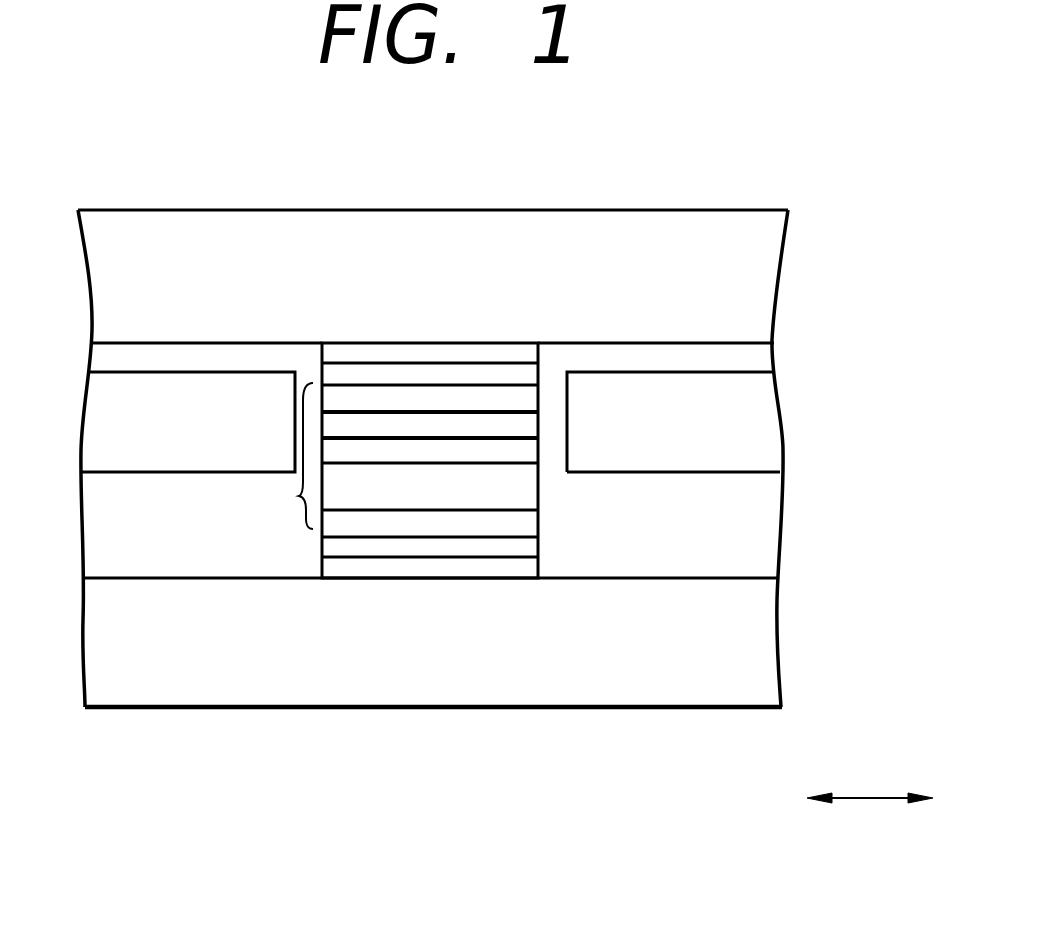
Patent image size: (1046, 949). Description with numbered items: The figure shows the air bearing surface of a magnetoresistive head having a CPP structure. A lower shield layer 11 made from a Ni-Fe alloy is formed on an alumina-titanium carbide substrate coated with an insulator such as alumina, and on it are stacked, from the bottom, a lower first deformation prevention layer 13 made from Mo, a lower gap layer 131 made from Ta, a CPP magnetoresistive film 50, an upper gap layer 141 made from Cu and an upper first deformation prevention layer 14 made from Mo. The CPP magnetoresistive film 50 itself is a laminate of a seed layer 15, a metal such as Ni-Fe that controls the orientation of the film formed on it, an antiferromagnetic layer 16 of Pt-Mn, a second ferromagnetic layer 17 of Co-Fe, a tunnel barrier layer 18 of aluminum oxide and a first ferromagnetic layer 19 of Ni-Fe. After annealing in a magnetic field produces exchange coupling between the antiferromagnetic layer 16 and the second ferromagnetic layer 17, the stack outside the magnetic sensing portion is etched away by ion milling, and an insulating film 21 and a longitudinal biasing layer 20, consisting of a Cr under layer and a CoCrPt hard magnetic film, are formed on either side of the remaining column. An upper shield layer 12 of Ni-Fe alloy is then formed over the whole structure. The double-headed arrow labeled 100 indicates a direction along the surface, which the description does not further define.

The lower shield layer 11 is at (115, 683).
The upper shield layer 12 is at (202, 228).
The lower first deformation prevention layer 13 is at (343, 573).
The lower gap layer 131 is at (383, 547).
The upper first deformation prevention layer 14 is at (508, 353).
The upper gap layer 141 is at (445, 373).
The seed layer 15 is at (422, 527).
The antiferromagnetic layer 16 is at (460, 500).
The second ferromagnetic layer 17 is at (490, 453).
The tunnel barrier layer 18 is at (345, 427).
The first ferromagnetic layer 19 is at (390, 395).
The longitudinal biasing layer 20 is at (142, 392).
The insulating film 21 is at (267, 357).
The CPP magnetoresistive film 50 is at (297, 497).
The track width direction 100 is at (872, 797).